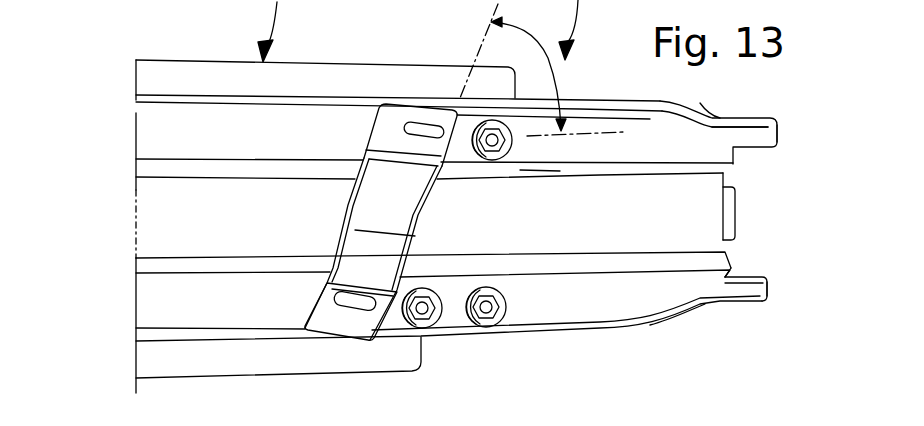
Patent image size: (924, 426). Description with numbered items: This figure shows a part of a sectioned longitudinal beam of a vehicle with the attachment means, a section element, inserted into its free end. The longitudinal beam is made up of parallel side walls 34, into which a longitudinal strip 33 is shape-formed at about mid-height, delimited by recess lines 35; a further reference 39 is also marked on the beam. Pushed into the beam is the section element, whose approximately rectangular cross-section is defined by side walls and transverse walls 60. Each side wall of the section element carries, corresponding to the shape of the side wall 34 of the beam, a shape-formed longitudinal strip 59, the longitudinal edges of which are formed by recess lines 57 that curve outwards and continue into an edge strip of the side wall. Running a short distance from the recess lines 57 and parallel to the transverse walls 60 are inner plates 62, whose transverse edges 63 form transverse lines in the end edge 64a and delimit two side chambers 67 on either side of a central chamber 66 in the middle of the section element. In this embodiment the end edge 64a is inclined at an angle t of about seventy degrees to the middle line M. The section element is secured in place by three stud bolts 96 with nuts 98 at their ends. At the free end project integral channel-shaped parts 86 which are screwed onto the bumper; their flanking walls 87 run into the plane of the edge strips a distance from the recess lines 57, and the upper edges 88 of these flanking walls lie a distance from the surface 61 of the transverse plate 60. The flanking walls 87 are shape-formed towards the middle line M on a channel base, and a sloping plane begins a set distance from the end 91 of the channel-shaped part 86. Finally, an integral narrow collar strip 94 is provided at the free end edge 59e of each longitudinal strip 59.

The longitudinal strip 33 is at (190, 220).
The side wall 34 is at (178, 129).
The recess line 35 is at (160, 80).
The rail side wall 39 is at (160, 163).
The recess line 57 is at (540, 173).
The longitudinal strip 59 is at (598, 238).
The free end edge 59e is at (722, 240).
The transverse wall 60 is at (587, 103).
The surface 61 is at (577, 100).
The inner plate 62 is at (393, 157).
The transverse edge 63 is at (333, 268).
The end edge 64a is at (315, 305).
The central chamber 66 is at (383, 222).
The side chamber 67 is at (400, 118).
The channel-shaped part 86 is at (795, 118).
The flanking wall 87 is at (763, 135).
The upper edge 88 is at (743, 118).
The end of the channel 91 is at (768, 284).
The collar strip 94 is at (738, 212).
The stud bolt 96 is at (498, 150).
The nut 98 is at (418, 292).
The middle line M is at (603, 134).
The angle t is at (513, 67).